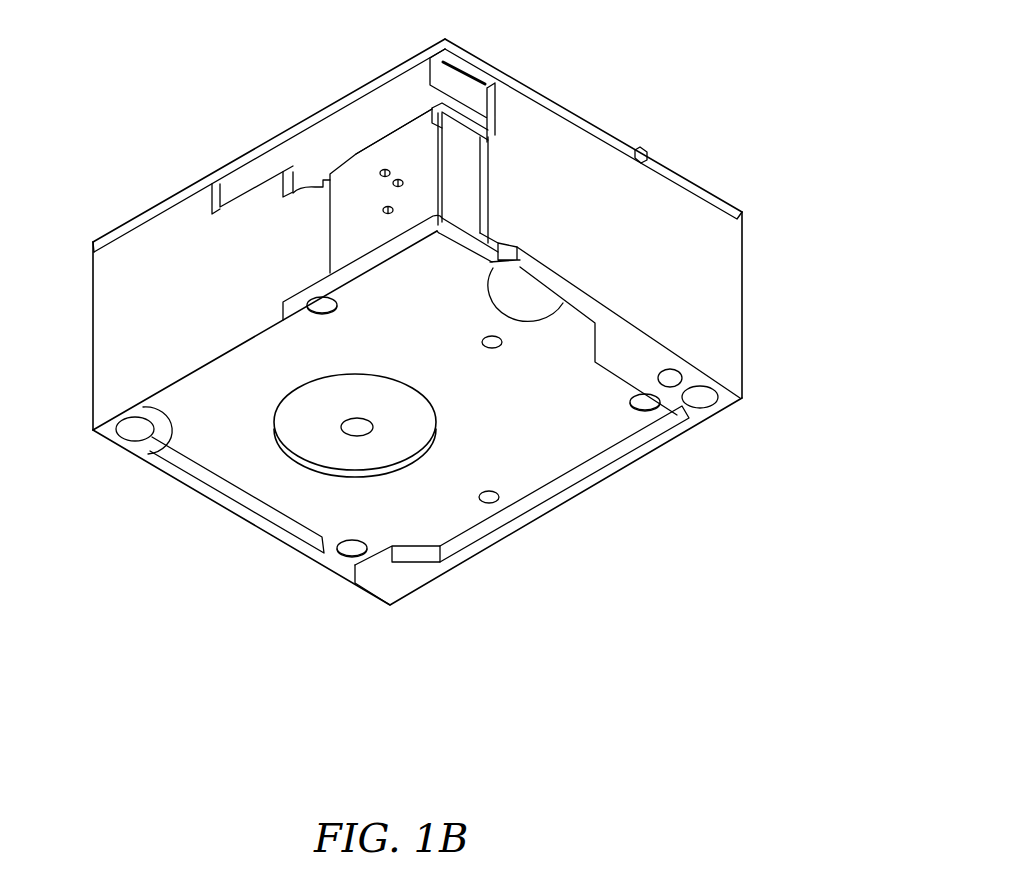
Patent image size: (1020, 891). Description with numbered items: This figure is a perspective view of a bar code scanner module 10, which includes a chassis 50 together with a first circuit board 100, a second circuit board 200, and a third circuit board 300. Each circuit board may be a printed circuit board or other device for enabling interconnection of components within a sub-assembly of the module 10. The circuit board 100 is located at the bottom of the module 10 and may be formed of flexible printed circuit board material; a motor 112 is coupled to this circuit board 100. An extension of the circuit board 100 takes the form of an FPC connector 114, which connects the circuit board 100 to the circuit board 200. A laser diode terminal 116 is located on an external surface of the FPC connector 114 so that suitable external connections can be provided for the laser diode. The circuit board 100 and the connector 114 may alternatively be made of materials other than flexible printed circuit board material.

The bar code scanner module 10 is at (742, 161).
The chassis 50 is at (636, 224).
The first circuit board 100 is at (564, 434).
The motor 112 is at (365, 483).
The FPC connector 114 is at (415, 145).
The laser diode terminal 116 is at (383, 177).
The second circuit board 200 is at (490, 122).
The third circuit board 300 is at (170, 198).